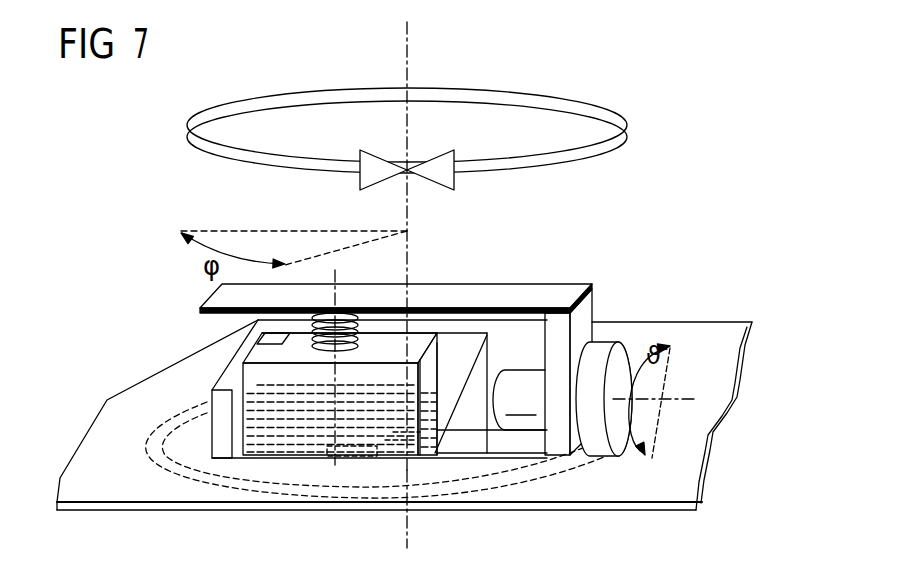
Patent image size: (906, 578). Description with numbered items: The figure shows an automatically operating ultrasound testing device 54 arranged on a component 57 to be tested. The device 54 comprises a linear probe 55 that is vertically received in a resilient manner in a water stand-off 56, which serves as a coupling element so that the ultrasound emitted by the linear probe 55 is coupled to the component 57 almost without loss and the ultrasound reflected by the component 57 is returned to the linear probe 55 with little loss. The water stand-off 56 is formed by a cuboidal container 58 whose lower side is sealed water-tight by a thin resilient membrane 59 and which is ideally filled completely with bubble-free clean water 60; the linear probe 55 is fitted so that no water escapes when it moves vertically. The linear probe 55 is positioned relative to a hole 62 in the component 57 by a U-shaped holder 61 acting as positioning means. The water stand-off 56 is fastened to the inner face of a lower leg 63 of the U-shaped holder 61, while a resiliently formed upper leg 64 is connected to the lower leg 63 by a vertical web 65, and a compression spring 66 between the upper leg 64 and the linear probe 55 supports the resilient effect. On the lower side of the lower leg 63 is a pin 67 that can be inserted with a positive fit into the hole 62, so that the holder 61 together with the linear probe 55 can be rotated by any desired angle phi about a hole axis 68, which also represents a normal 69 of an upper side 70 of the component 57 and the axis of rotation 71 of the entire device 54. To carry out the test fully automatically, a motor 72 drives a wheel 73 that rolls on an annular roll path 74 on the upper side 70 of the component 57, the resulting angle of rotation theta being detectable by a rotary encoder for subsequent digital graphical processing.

The device 54 is at (612, 87).
The linear probe 55 is at (259, 345).
The water stand-off 56 is at (192, 433).
The component 57 is at (698, 483).
The cuboidal container 58 is at (230, 381).
The resilient membrane 59 is at (274, 448).
The clean water 60 is at (308, 424).
The U-shaped holder 61 is at (588, 216).
The hole 62 is at (436, 458).
The lower leg 63 is at (529, 444).
The upper leg 64 is at (532, 294).
The vertical web 65 is at (588, 310).
The compression spring 66 is at (357, 328).
The pin 67 is at (420, 465).
The hole axis 68 is at (405, 538).
The normal 69 is at (409, 40).
The upper side 70 is at (702, 342).
The axis of rotation 71 is at (453, 246).
The motor 72 is at (519, 400).
The wheel 73 is at (628, 456).
The annular roll path 74 is at (183, 474).